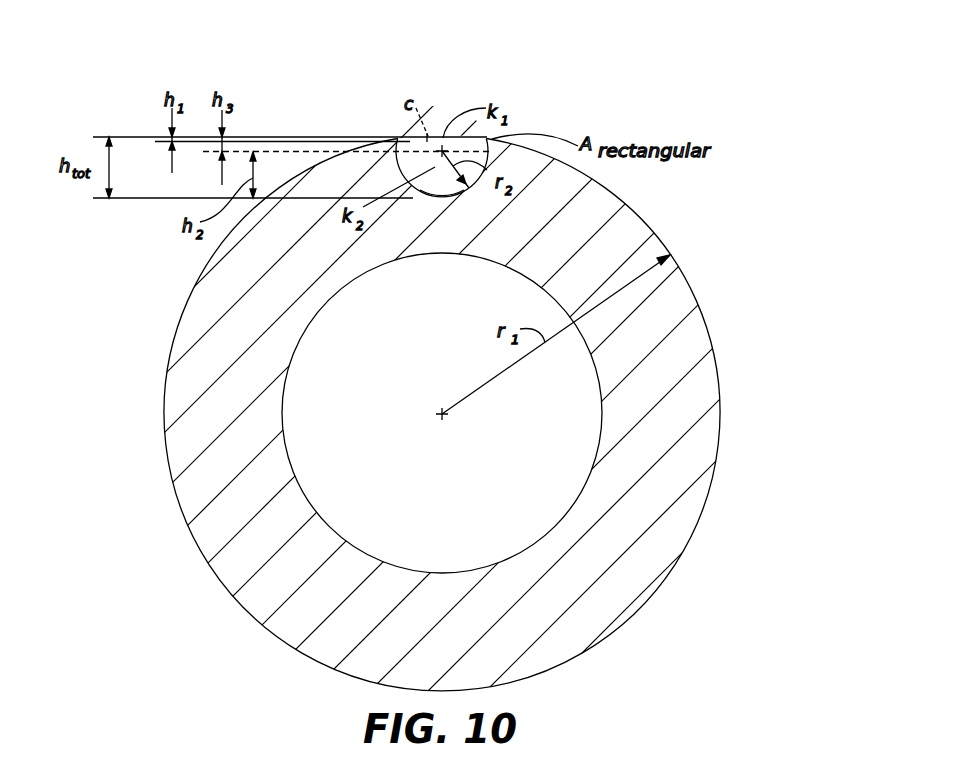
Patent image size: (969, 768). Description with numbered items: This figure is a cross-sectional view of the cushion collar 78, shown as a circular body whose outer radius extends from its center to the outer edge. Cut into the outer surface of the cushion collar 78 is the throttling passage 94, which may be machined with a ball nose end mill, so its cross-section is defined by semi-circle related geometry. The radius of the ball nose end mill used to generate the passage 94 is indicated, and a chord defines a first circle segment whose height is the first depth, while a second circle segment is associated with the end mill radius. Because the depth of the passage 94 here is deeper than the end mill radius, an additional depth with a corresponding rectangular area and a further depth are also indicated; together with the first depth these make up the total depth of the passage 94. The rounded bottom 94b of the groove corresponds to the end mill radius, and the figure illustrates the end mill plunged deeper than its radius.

The cushion collar 78 is at (684, 205).
The throttling passage 94 is at (441, 113).
The rounded groove bottom 94b is at (440, 196).